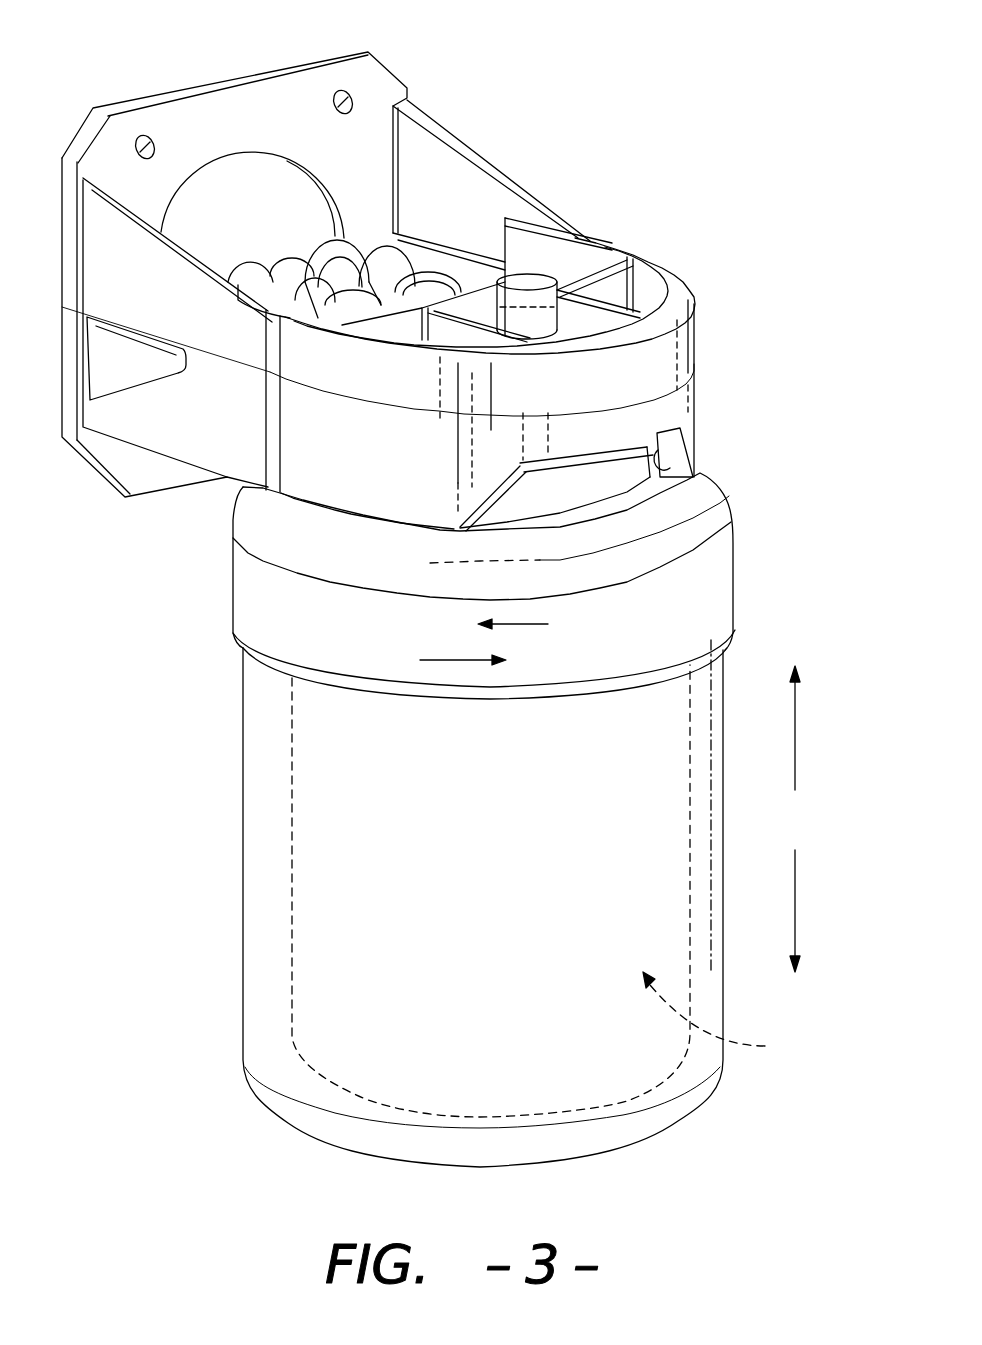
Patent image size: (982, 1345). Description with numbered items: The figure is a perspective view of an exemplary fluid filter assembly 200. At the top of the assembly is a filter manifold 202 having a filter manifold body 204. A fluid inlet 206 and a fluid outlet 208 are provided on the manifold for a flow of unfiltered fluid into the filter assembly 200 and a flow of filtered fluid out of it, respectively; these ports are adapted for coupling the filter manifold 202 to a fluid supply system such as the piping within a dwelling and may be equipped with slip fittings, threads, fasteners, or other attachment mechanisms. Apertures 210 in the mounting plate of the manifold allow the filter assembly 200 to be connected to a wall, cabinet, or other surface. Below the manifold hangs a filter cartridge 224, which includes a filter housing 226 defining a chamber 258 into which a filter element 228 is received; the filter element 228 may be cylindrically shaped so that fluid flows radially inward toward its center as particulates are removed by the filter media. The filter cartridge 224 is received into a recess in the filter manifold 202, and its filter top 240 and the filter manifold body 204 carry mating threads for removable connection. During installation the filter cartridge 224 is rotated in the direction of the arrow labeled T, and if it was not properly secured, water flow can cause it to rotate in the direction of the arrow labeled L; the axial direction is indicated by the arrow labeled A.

The fluid filter assembly 200 is at (550, 111).
The filter manifold 202 is at (623, 240).
The filter manifold body 204 is at (668, 350).
The fluid inlet 206 is at (307, 260).
The fluid outlet 208 is at (232, 263).
The apertures 210 is at (150, 135).
The filter cartridge 224 is at (196, 759).
The filter housing 226 is at (243, 977).
The filter element 228 is at (292, 893).
The filter top 240 is at (243, 603).
The chamber 258 is at (733, 1015).